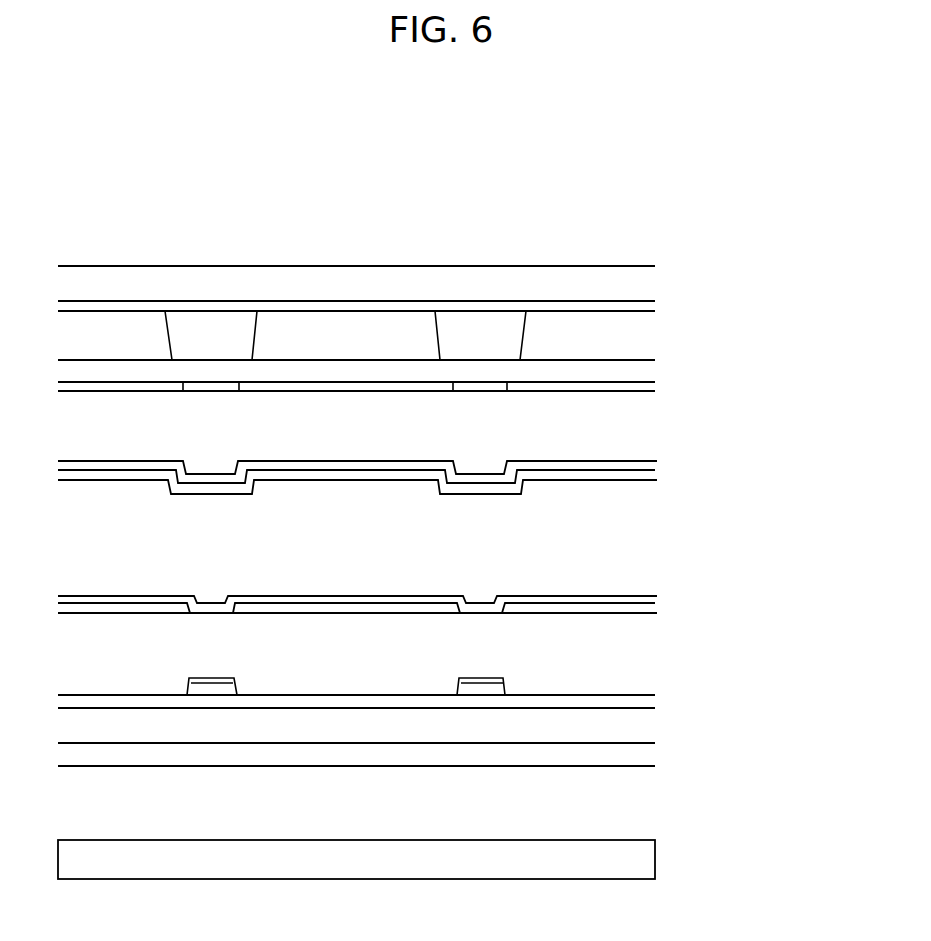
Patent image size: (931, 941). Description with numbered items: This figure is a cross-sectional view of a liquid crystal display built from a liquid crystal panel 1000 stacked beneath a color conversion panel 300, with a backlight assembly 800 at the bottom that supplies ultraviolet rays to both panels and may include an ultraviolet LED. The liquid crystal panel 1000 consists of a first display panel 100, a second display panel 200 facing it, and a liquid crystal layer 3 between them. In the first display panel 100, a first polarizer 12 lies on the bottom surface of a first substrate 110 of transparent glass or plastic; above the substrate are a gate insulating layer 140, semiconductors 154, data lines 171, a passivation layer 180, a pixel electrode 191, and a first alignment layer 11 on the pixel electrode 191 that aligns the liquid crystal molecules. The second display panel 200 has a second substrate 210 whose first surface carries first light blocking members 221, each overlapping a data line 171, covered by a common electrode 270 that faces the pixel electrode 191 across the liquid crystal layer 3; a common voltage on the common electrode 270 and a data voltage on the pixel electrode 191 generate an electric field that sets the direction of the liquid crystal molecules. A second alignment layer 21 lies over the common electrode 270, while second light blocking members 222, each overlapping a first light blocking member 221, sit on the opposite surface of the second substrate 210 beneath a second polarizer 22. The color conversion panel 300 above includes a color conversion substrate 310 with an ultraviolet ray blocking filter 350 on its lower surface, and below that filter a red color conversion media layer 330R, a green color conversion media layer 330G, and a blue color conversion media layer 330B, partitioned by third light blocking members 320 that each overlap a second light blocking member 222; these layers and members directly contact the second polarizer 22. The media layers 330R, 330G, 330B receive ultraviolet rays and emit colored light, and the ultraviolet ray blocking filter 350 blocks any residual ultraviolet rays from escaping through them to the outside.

The color conversion substrate 310 is at (641, 283).
The ultraviolet ray blocking filter 350 is at (655, 306).
The third light blocking member 320 is at (490, 335).
The red color conversion media layer 330R is at (90, 348).
The green color conversion media layer 330G is at (325, 348).
The blue color conversion media layer 330B is at (615, 348).
The color conversion panel 300 is at (718, 273).
The second polarizer 22 is at (641, 372).
The second light blocking member 222 is at (466, 391).
The second substrate 210 is at (641, 421).
The common electrode 270 is at (657, 463).
The second alignment layer 21 is at (657, 480).
The first light blocking member 221 is at (212, 468).
The second display panel 200 is at (718, 357).
The liquid crystal layer 3 is at (641, 544).
The liquid crystal panel 1000 is at (768, 410).
The first alignment layer 11 is at (657, 599).
The pixel electrode 191 is at (348, 611).
The passivation layer 180 is at (641, 660).
The gate insulating layer 140 is at (648, 701).
The first substrate 110 is at (645, 724).
The first polarizer 12 is at (645, 757).
The first display panel 100 is at (718, 580).
The semiconductor 154 is at (196, 692).
The data line 171 is at (222, 682).
The backlight assembly 800 is at (648, 855).